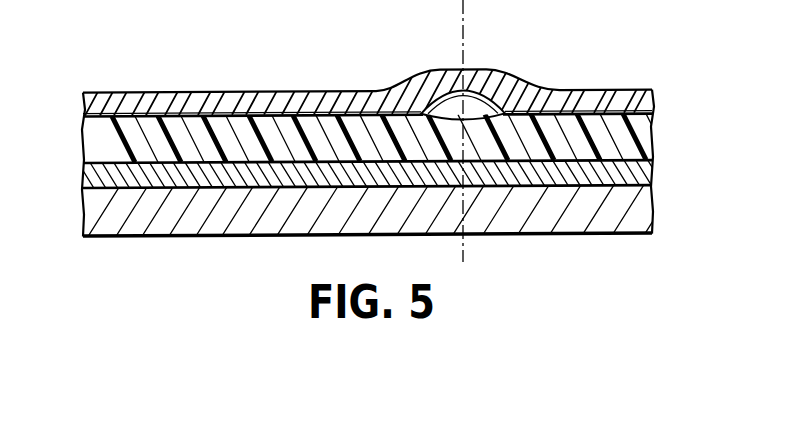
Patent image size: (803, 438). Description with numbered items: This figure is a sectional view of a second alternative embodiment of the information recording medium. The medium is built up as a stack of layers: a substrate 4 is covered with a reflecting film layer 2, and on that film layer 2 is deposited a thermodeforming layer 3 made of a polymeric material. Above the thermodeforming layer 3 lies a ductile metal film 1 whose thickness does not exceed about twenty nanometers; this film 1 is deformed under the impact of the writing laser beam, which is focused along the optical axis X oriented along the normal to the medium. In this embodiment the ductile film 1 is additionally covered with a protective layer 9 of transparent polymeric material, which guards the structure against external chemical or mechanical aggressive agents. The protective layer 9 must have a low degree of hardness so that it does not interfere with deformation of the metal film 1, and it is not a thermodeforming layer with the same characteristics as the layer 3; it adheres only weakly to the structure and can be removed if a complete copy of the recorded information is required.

The ductile metal film 1 is at (354, 88).
The reflecting film layer 2 is at (365, 144).
The thermodeforming layer 3 is at (82, 147).
The substrate 4 is at (93, 218).
The protective layer 9 is at (187, 92).
The optical axis X is at (463, 11).